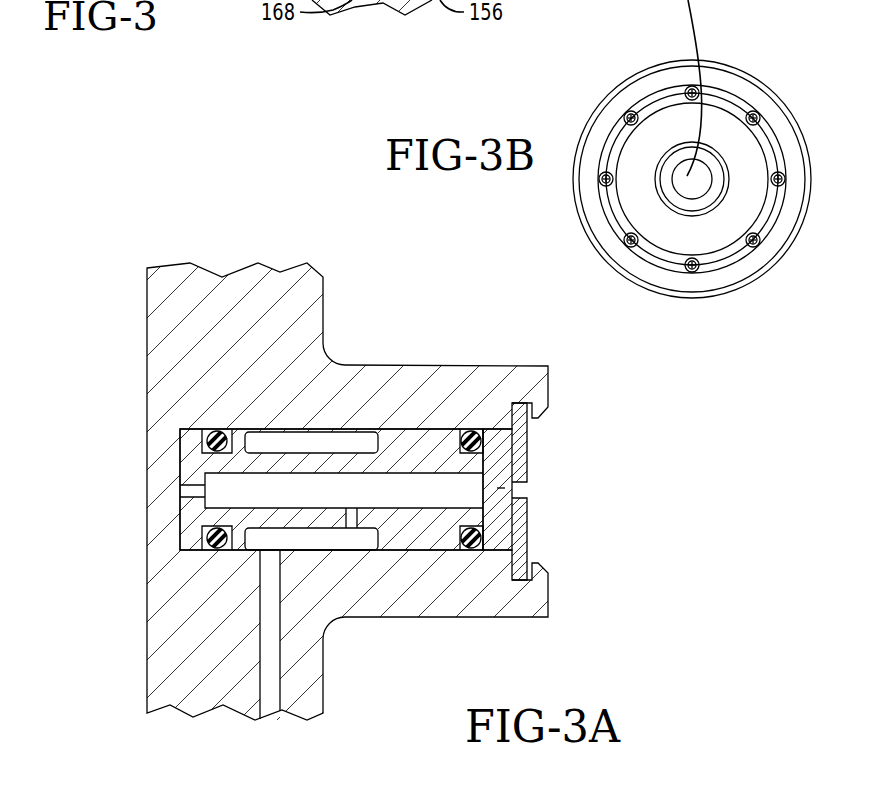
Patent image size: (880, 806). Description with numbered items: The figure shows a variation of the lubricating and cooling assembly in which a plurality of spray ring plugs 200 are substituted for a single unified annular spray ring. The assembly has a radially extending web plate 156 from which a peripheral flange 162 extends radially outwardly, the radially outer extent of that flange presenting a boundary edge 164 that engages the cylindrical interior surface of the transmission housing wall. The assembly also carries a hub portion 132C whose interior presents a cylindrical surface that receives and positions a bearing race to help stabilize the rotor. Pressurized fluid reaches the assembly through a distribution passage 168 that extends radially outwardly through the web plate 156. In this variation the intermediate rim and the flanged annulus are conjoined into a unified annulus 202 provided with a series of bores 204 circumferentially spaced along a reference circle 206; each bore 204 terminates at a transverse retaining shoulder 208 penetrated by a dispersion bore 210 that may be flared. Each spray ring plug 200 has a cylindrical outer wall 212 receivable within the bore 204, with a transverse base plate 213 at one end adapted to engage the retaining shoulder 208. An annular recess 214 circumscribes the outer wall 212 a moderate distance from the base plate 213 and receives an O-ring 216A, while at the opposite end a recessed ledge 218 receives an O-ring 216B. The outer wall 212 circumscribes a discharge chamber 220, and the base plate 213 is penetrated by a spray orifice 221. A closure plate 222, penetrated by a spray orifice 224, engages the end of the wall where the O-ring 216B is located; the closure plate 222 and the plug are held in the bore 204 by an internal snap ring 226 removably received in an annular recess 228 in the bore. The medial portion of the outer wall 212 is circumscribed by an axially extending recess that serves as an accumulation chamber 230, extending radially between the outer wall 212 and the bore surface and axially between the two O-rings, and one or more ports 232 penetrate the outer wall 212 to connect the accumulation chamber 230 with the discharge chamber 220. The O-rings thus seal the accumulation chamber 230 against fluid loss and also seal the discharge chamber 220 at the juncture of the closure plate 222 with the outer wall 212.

In FIG. 3B, the hub portion 132C is at (727, 193).
In FIG. 3B, the web plate 156 is at (698, 230).
In FIG. 3A, the web plate 156 is at (212, 638).
In FIG. 3B, the peripheral flange 162 is at (662, 82).
In FIG. 3A, the peripheral flange 162 is at (222, 288).
In FIG. 3B, the boundary edge 164 is at (735, 70).
In FIG. 3A, the distribution passage 168 is at (268, 652).
In FIG. 3B, the spray ring plug 200 is at (631, 118).
In FIG. 3A, the spray ring plug 200 is at (516, 460).
In FIG. 3B, the unified annulus 202 is at (767, 138).
In FIG. 3A, the unified annulus 202 is at (373, 366).
In FIG. 3B, the bore 204 is at (692, 265).
In FIG. 3A, the bore 204 is at (420, 432).
In FIG. 3B, the reference circle 206 is at (610, 203).
In FIG. 3A, the retaining shoulder 208 is at (183, 452).
In FIG. 3A, the dispersion bore 210 is at (195, 507).
In FIG. 3A, the outer wall 212 is at (412, 530).
In FIG. 3A, the transverse base plate 213 is at (193, 505).
In FIG. 3A, the annular recess 214 is at (210, 545).
In FIG. 3A, the O-ring 216A is at (212, 435).
In FIG. 3A, the O-ring 216B is at (475, 532).
In FIG. 3A, the recessed ledge 218 is at (488, 427).
In FIG. 3A, the discharge chamber 220 is at (376, 501).
In FIG. 3A, the spray orifice 221 is at (192, 490).
In FIG. 3A, the closure plate 222 is at (505, 520).
In FIG. 3A, the spray orifice 224 is at (498, 488).
In FIG. 3A, the internal snap ring 226 is at (522, 570).
In FIG. 3A, the annular recess 228 is at (520, 405).
In FIG. 3A, the accumulation chamber 230 is at (325, 545).
In FIG. 3A, the port 232 is at (352, 522).